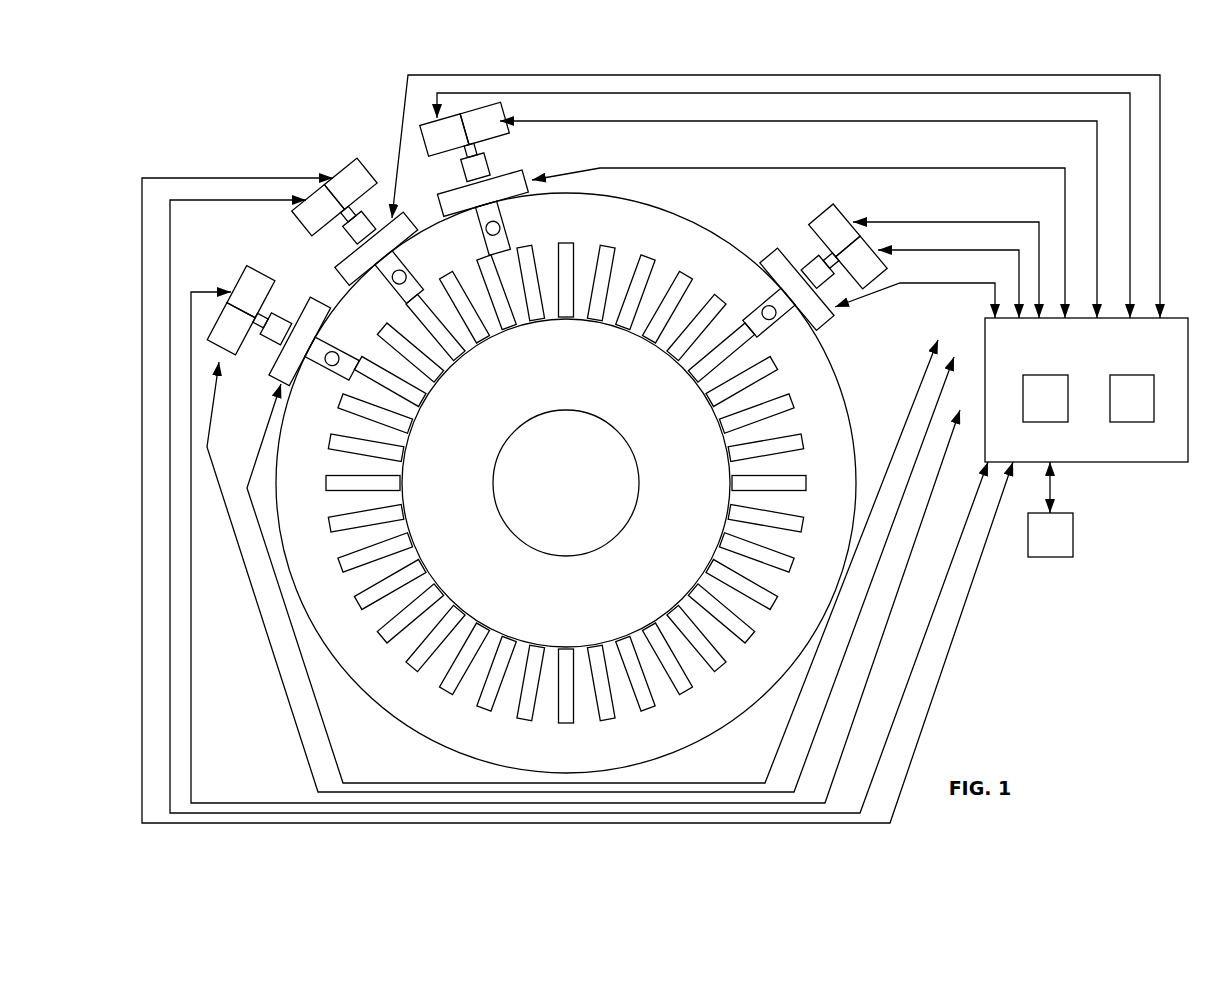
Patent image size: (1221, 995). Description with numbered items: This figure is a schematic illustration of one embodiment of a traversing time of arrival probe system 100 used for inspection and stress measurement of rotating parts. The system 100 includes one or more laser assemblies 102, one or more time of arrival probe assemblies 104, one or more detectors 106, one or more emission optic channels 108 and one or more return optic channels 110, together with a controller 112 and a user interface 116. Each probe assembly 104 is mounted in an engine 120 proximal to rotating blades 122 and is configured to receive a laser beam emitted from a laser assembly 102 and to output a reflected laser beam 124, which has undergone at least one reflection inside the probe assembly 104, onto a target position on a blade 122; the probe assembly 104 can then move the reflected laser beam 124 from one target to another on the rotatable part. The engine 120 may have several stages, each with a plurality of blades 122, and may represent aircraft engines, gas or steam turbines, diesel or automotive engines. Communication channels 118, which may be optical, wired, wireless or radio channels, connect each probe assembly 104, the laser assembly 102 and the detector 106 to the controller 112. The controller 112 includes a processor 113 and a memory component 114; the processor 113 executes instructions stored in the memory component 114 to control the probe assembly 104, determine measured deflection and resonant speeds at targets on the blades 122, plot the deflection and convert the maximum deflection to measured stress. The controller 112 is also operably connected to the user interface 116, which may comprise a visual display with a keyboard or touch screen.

The traversing time of arrival probe system 100 is at (330, 130).
The laser assembly 102 is at (557, 209).
The time of arrival probe assembly 104 is at (365, 262).
The detector 106 is at (533, 234).
The emission optic channel 108 is at (352, 211).
The return optic channel 110 is at (340, 222).
The controller 112 is at (1184, 318).
The processor 113 is at (1045, 398).
The memory component 114 is at (1132, 398).
The user interface 116 is at (1050, 509).
The communication channels 118 is at (993, 221).
The engine 120 is at (389, 712).
The rotating blades 122 is at (558, 282).
The reflected laser beam 124 is at (733, 320).